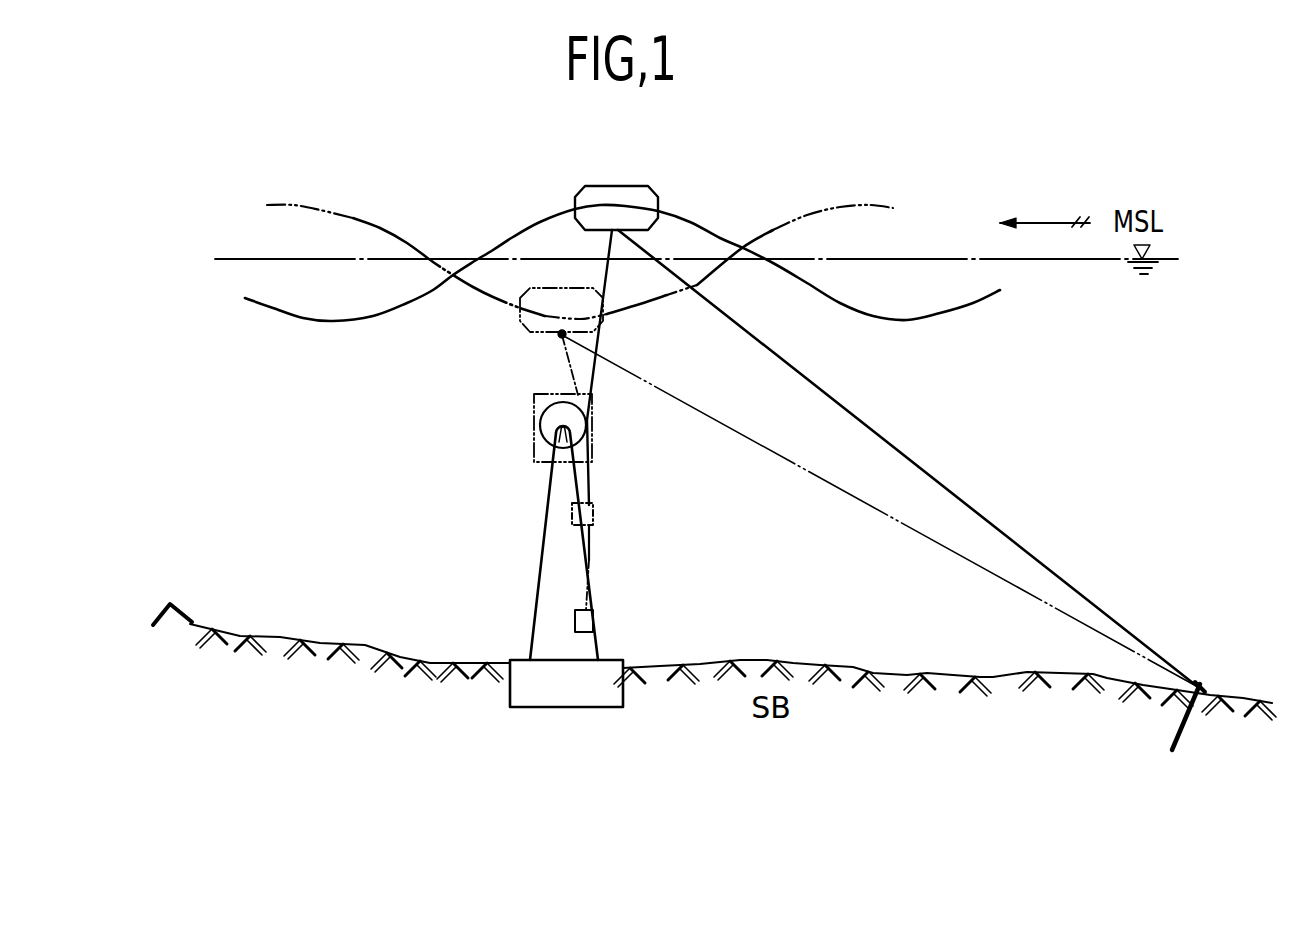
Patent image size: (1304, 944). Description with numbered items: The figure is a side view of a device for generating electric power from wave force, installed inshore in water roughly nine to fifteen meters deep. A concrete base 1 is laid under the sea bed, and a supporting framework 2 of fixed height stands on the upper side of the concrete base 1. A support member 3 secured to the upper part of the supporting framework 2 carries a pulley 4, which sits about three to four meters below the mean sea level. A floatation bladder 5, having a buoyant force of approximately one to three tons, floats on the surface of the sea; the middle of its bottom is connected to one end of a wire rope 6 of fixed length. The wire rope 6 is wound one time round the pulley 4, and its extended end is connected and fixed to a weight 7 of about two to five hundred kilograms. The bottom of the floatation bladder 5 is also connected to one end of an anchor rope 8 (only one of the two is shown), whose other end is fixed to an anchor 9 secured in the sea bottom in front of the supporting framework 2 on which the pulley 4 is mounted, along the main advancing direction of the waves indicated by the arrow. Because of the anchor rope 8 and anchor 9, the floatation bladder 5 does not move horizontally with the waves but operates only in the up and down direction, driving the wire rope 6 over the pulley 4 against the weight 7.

The concrete base 1 is at (522, 670).
The supporting framework 2 is at (550, 528).
The support member 3 is at (553, 452).
The pulley 4 is at (550, 423).
The floatation bladder 5 is at (655, 196).
The wire rope 6 is at (595, 387).
The weight 7 is at (595, 512).
The anchor rope 8 is at (952, 490).
The anchor 9 is at (1201, 680).